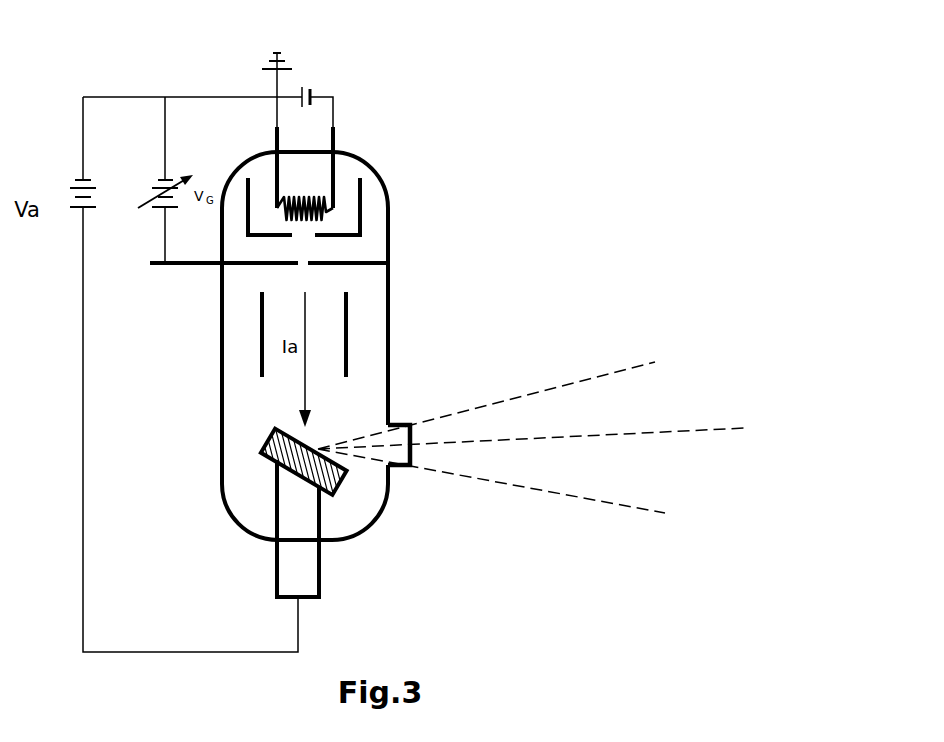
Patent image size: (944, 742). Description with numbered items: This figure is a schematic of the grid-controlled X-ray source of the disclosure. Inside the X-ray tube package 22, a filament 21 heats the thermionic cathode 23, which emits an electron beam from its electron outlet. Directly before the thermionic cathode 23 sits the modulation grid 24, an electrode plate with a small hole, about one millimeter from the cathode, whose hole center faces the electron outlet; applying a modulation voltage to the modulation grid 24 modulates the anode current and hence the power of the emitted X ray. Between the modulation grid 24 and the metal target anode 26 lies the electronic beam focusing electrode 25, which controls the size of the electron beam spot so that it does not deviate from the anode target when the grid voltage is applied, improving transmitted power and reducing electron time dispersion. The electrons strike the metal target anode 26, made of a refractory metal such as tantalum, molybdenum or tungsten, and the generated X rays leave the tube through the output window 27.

The filament 21 is at (312, 196).
The X-ray tube package 22 is at (376, 176).
The thermionic cathode 23 is at (360, 235).
The modulation grid 24 is at (388, 263).
The electronic beam focusing electrode 25 is at (346, 348).
The metal target anode 26 is at (338, 460).
The output window 27 is at (411, 466).